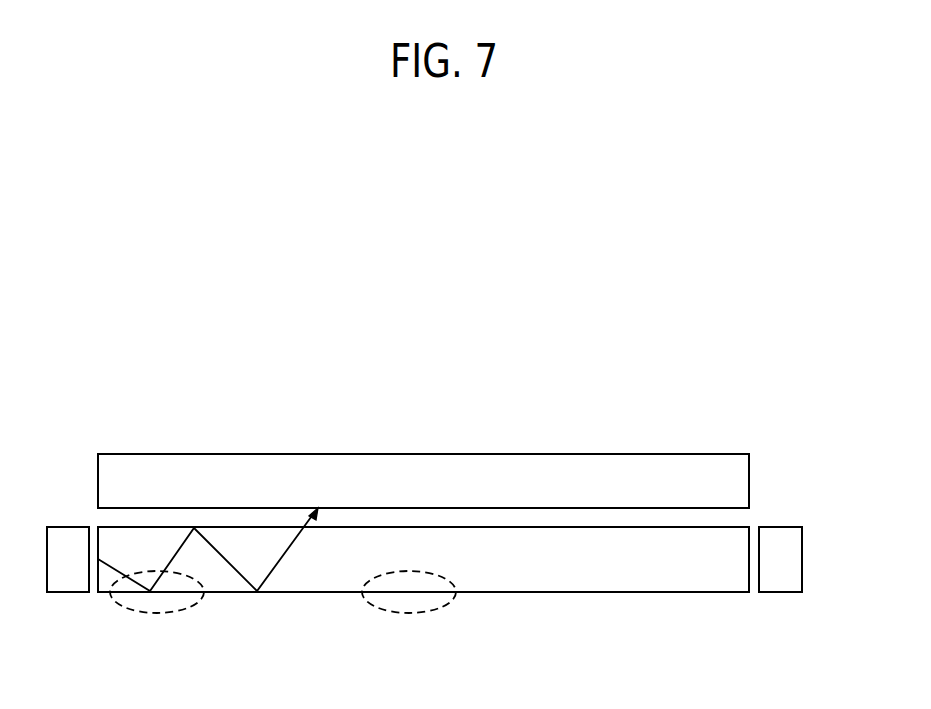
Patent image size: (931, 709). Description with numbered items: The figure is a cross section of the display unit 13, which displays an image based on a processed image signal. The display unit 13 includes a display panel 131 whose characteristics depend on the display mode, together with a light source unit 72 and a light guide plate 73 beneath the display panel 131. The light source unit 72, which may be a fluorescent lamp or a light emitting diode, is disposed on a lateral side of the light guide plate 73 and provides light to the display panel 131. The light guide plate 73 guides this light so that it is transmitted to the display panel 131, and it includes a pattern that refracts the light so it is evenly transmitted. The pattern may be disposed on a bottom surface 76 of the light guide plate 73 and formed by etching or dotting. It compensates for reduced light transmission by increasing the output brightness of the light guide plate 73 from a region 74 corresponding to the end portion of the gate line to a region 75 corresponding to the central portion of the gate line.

The display unit 13 is at (717, 365).
The display panel 131 is at (412, 454).
The light guide plate 73 is at (559, 527).
The light source unit 72 is at (67, 594).
The region corresponding to the end portion of the gate line 74 is at (155, 614).
The region corresponding to the central portion of the gate line 75 is at (409, 614).
The bottom surface 76 is at (300, 594).